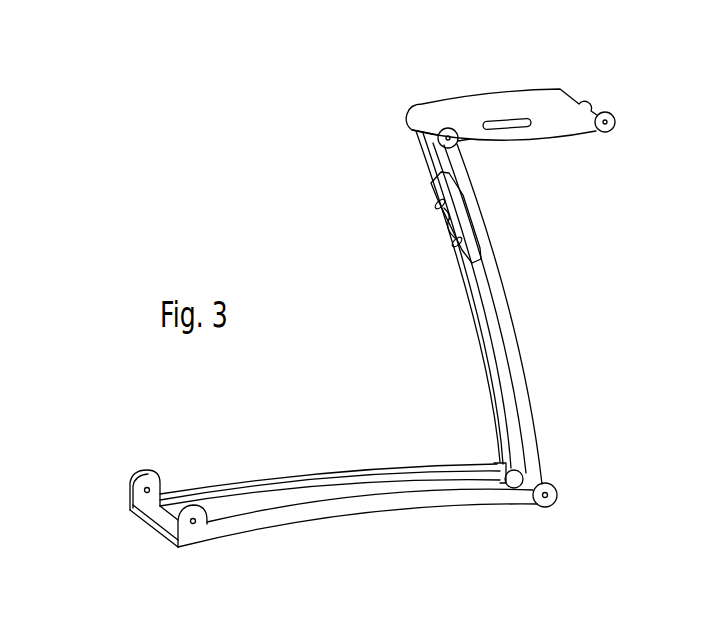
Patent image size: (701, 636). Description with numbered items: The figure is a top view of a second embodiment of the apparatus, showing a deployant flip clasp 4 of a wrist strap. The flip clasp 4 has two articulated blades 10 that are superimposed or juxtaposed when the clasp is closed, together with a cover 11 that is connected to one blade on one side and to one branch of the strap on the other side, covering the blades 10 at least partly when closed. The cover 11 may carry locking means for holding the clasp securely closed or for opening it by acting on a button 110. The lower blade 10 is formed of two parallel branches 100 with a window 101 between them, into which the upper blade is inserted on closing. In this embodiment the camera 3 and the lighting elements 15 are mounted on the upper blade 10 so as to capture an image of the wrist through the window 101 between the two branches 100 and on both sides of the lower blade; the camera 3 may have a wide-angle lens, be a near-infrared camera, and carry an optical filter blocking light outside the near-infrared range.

The camera 3 is at (440, 200).
The flip clasp 4 is at (114, 542).
The blade 10 is at (574, 414).
The cover 11 is at (532, 105).
The lighting element 15 is at (441, 221).
The parallel branch 100 is at (513, 328).
The window 101 is at (268, 500).
The button 110 is at (510, 118).